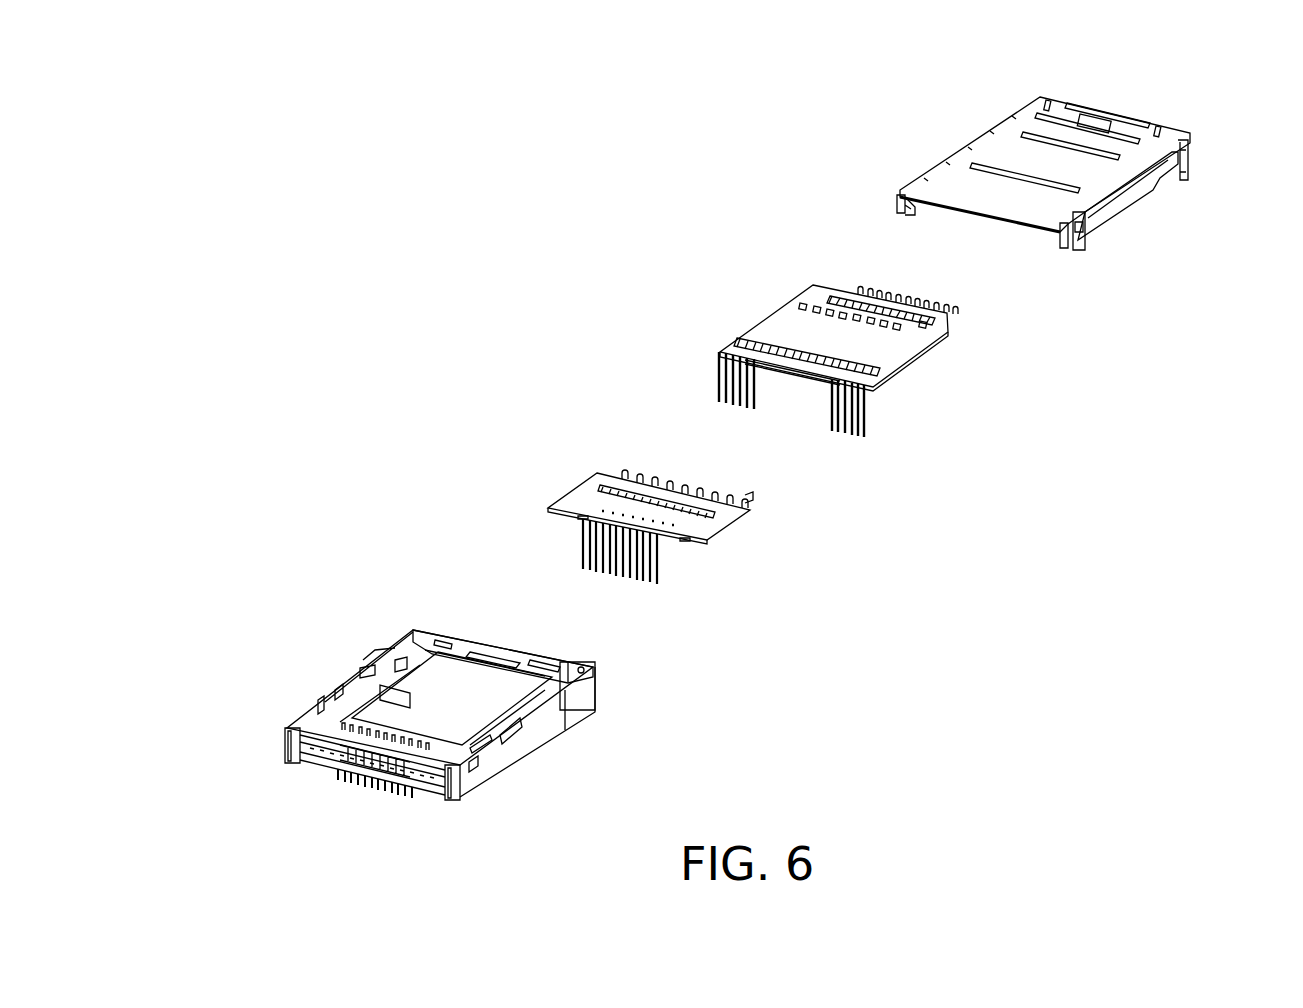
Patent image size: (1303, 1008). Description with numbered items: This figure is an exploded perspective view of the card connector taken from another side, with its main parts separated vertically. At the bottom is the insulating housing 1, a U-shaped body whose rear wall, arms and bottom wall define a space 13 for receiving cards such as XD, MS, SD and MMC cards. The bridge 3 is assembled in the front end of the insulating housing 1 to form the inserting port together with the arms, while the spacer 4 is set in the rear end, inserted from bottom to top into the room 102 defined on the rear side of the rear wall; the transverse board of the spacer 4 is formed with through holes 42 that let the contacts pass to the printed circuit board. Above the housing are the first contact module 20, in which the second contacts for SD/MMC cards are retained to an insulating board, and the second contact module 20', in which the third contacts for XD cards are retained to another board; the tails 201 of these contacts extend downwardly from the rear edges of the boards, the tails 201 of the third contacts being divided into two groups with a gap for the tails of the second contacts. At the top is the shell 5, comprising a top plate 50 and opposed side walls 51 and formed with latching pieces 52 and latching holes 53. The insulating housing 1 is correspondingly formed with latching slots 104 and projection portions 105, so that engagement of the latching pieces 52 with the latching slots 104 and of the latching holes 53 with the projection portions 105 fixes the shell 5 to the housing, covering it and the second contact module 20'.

The insulating housing 1 is at (425, 733).
The bridge 3 is at (497, 650).
The spacer 4 is at (297, 762).
The shell 5 is at (1011, 231).
The space 13 is at (483, 700).
The first contact module 20 is at (714, 551).
The second contact module 20' is at (884, 382).
The through hole 42 is at (335, 765).
The top plate 50 is at (973, 190).
The side wall 51 is at (1117, 203).
The latching piece 52 is at (1064, 243).
The latching hole 53 is at (1083, 240).
The room 102 is at (430, 770).
The latching slot 104 is at (455, 780).
The projection portion 105 is at (477, 770).
The tail 201 is at (350, 770).